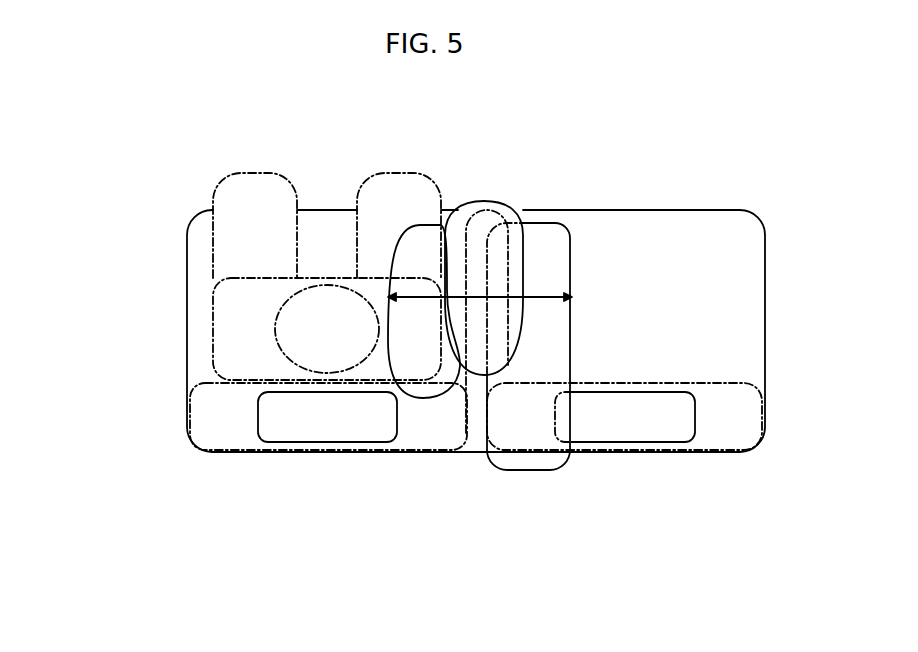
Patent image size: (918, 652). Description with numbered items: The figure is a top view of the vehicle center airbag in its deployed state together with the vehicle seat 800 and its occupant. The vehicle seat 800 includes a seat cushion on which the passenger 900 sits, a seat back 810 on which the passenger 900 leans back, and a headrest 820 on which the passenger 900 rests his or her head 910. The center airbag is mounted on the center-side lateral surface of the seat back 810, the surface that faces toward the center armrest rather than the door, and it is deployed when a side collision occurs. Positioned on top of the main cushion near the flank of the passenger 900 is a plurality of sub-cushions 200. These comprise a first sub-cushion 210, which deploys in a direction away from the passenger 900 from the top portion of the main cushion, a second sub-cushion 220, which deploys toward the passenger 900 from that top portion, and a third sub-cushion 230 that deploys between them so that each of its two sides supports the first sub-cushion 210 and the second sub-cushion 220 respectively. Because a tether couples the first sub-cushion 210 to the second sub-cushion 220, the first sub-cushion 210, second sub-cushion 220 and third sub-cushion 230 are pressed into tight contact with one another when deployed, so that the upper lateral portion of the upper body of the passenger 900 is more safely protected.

The sub-cushions 200 is at (600, 445).
The first sub-cushion 210 is at (547, 237).
The second sub-cushion 220 is at (420, 235).
The third sub-cushion 230 is at (478, 237).
The vehicle seat 800 is at (186, 417).
The seat back 810 is at (236, 427).
The headrest 820 is at (327, 420).
The passenger 900 is at (213, 315).
The head 910 is at (297, 332).